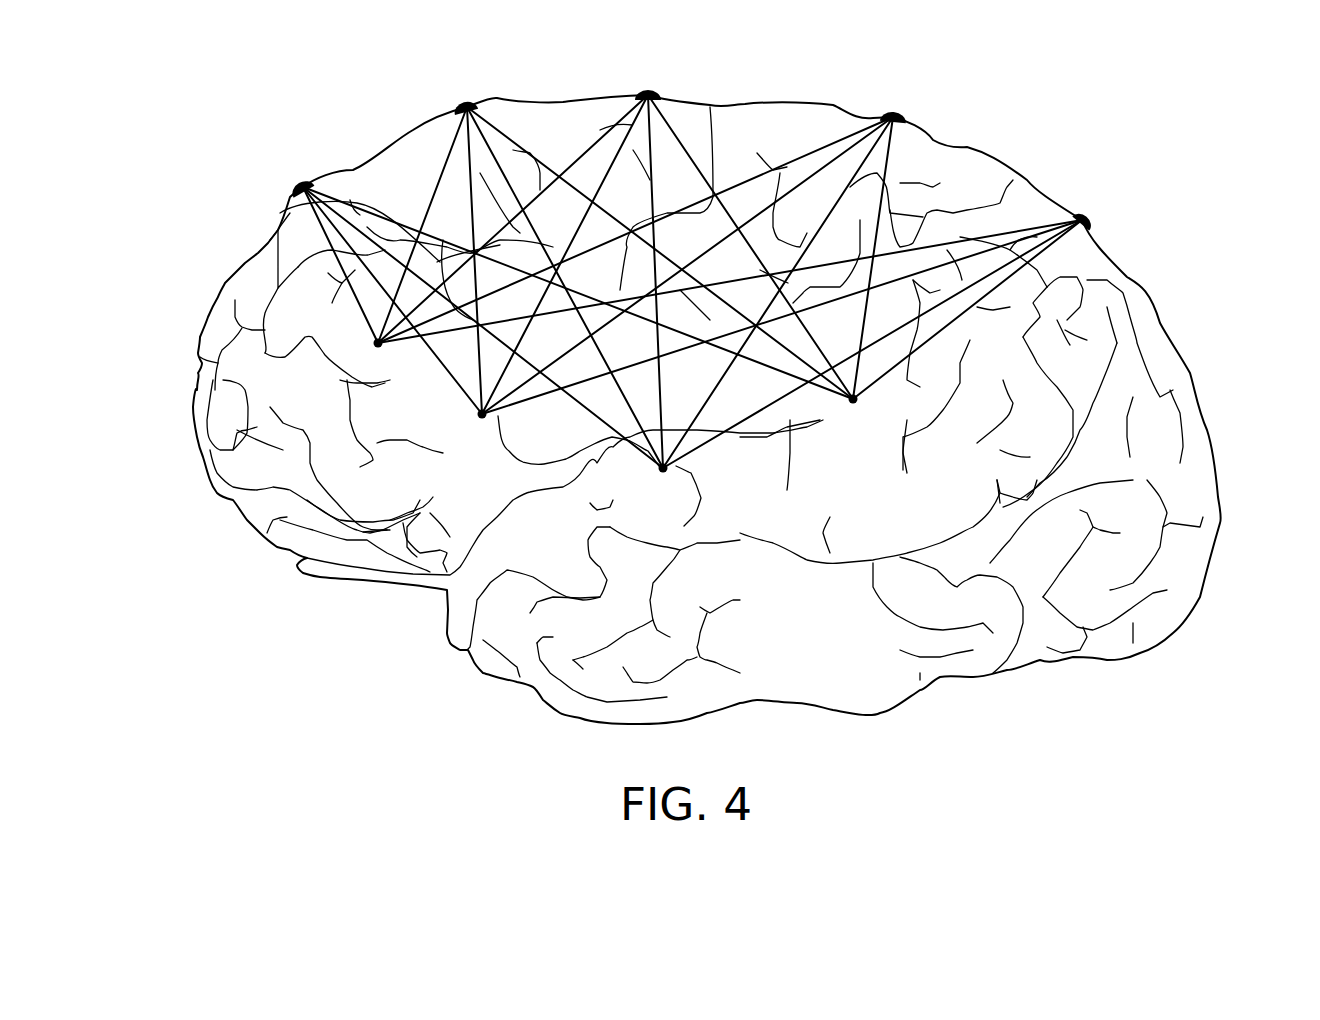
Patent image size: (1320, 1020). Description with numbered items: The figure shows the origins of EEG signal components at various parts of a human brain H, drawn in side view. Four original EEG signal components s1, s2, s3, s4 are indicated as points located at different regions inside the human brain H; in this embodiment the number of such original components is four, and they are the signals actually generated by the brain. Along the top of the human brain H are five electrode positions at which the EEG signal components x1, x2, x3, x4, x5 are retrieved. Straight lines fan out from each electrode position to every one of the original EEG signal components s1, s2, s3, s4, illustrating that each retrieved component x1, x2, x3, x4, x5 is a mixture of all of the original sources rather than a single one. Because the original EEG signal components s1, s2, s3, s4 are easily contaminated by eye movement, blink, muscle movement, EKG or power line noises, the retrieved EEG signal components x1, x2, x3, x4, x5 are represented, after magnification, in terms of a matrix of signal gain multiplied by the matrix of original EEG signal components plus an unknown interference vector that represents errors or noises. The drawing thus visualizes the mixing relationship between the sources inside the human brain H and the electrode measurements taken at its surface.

The human brain H is at (1147, 240).
The EEG signal component x1 is at (303, 167).
The EEG signal component x2 is at (459, 87).
The EEG signal component x3 is at (648, 74).
The EEG signal component x4 is at (899, 97).
The EEG signal component x5 is at (1094, 208).
The original EEG signal component s1 is at (361, 356).
The original EEG signal component s2 is at (463, 419).
The original EEG signal component s3 is at (657, 486).
The original EEG signal component s4 is at (876, 403).